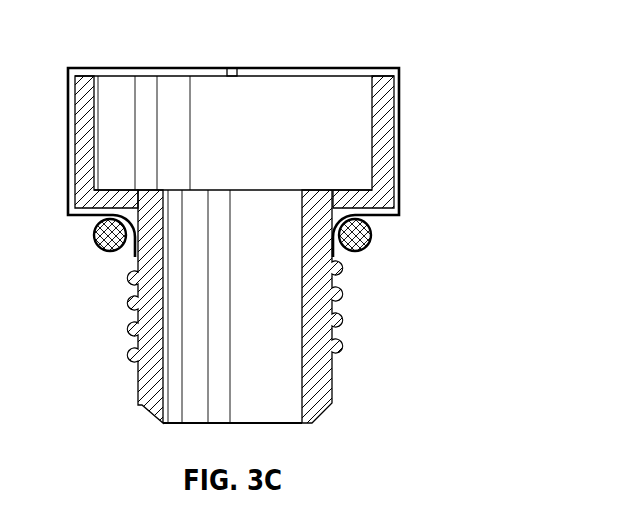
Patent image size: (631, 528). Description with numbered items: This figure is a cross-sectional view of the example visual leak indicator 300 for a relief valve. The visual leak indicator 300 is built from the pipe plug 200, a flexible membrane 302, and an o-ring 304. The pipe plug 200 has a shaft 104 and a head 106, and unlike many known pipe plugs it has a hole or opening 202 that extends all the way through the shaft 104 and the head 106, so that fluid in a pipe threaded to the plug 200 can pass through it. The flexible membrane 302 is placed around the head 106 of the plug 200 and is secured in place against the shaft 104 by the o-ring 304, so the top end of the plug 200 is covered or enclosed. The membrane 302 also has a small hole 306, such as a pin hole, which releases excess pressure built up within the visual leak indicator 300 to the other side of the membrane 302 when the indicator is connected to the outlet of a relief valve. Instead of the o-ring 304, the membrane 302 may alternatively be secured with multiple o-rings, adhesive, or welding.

The visual leak indicator 300 is at (152, 53).
The flexible membrane 302 is at (398, 72).
The small hole 306 is at (233, 67).
The head 106 is at (387, 120).
The pipe plug 200 is at (128, 412).
The shaft 104 is at (137, 263).
The opening 202 is at (284, 434).
The o-ring 304 is at (368, 237).